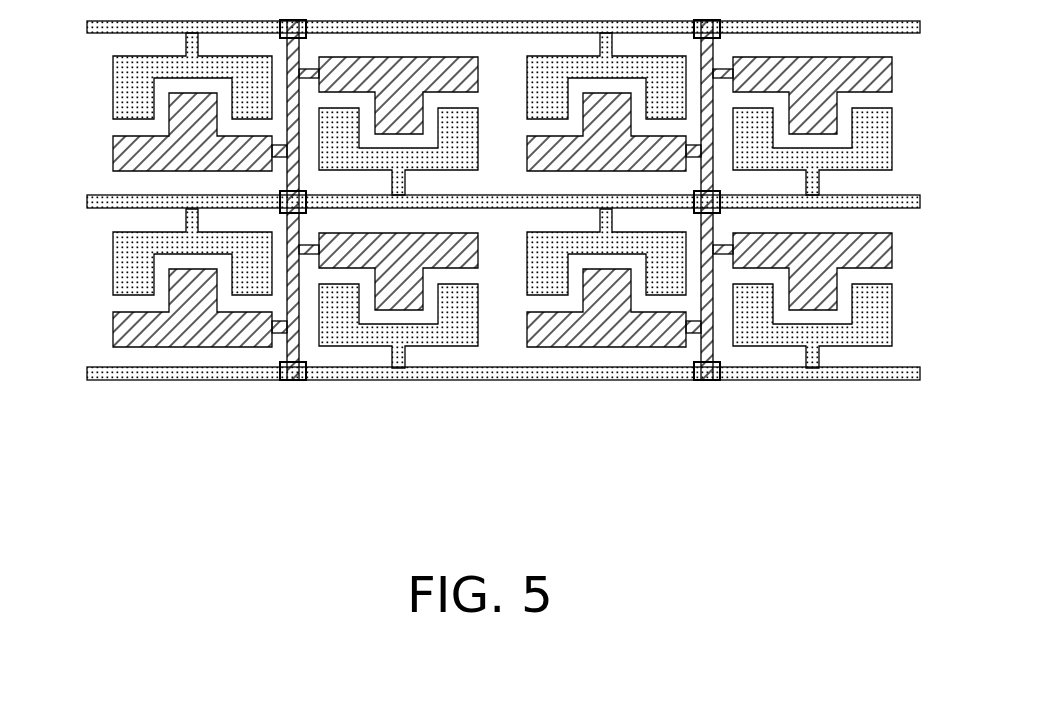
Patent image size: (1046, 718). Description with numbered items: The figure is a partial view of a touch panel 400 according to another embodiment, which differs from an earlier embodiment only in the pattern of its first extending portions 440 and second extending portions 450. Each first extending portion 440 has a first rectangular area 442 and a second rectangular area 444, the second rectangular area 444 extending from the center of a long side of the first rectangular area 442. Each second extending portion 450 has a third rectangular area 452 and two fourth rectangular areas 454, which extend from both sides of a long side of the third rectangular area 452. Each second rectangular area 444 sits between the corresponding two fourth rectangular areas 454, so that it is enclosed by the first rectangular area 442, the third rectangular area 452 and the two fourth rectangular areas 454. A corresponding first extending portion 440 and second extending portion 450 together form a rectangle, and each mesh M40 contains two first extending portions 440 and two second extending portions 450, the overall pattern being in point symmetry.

The touch panel 400 is at (503, 263).
The mesh M40 is at (501, 358).
The first extending portion 440 is at (615, 388).
The first rectangular area 442 is at (667, 327).
The second rectangular area 444 is at (603, 293).
The second extending portion 450 is at (391, 395).
The third rectangular area 452 is at (382, 337).
The fourth rectangular area 454 is at (340, 298).